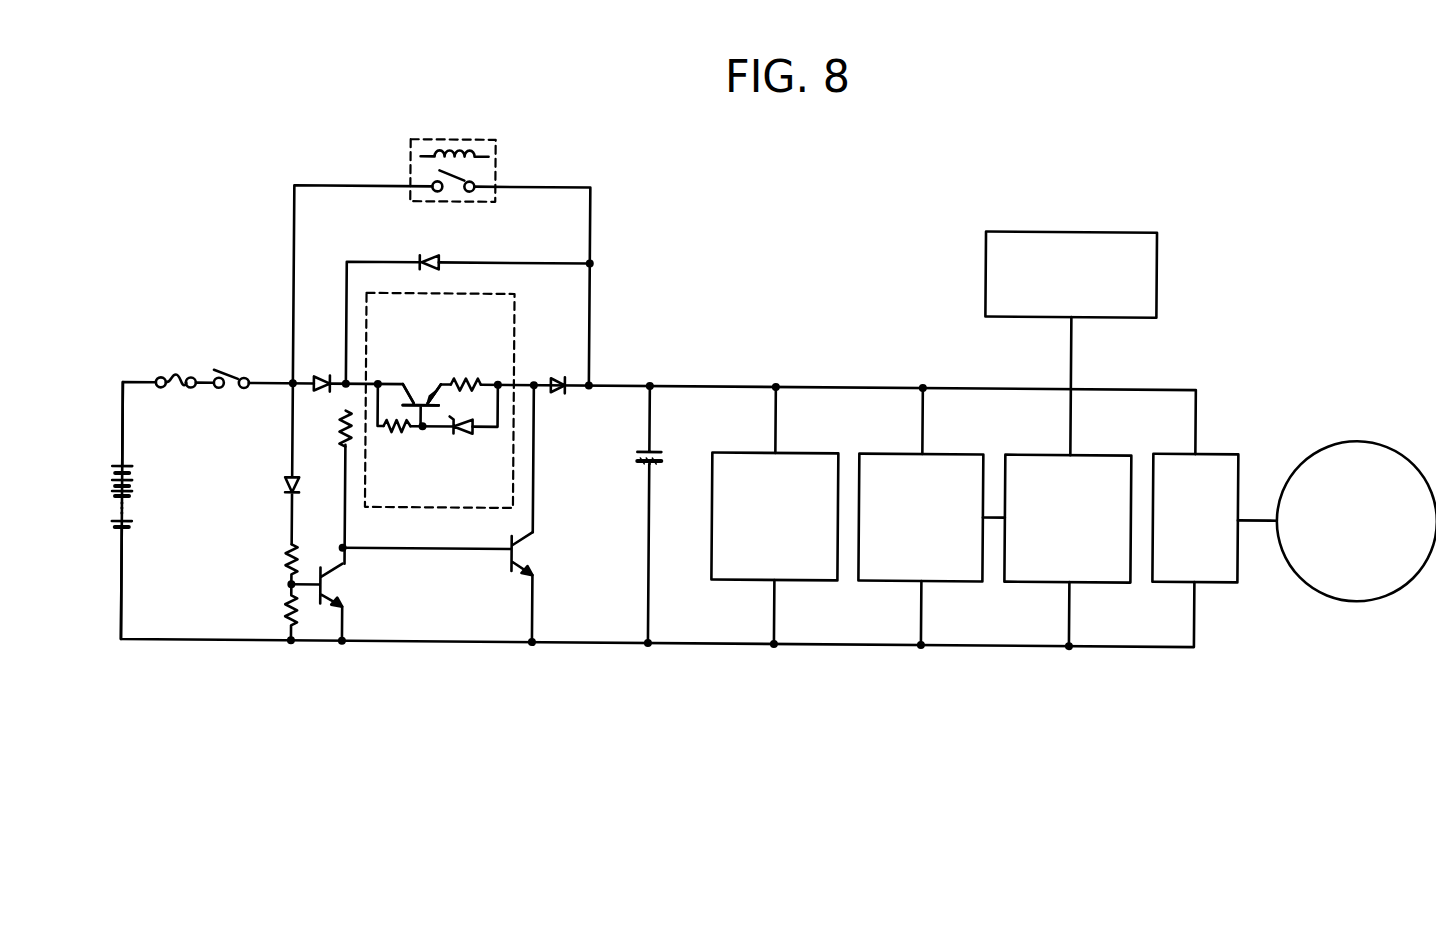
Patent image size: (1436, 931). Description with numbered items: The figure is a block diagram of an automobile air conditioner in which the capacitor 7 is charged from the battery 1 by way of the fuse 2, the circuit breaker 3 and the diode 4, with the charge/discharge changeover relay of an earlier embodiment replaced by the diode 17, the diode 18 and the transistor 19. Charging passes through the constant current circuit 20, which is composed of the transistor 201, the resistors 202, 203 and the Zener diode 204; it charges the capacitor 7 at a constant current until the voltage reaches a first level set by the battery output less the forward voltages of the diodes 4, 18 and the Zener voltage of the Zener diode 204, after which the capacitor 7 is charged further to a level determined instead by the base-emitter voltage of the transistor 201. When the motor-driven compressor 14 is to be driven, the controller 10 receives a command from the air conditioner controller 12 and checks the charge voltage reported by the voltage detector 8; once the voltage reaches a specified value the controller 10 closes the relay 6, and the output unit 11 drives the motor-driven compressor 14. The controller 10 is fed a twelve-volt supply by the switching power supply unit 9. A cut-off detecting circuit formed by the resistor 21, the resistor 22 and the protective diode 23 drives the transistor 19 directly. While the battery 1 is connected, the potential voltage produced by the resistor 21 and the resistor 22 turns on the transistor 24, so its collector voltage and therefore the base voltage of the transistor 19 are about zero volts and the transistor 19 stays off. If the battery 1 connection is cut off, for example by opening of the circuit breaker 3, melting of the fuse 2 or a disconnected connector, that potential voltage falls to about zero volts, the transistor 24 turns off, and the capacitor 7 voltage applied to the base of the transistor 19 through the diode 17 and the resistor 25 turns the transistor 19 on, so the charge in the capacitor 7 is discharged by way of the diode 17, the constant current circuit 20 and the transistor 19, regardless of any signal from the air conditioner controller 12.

The battery 1 is at (137, 487).
The fuse 2 is at (172, 378).
The circuit breaker 3 is at (226, 378).
The diode 4 is at (318, 374).
The relay 6 is at (496, 151).
The capacitor 7 is at (663, 448).
The voltage detector 8 is at (742, 582).
The switching power supply unit 9 is at (894, 582).
The controller 10 is at (1046, 582).
The output unit 11 is at (1172, 582).
The air conditioner controller 12 is at (1158, 249).
The motor-driven compressor 14 is at (1373, 433).
The diode 17 is at (422, 254).
The diode 18 is at (554, 400).
The transistor 19 is at (532, 556).
The constant current circuit 20 is at (469, 393).
The transistor 201 is at (413, 396).
The resistor 202 is at (398, 443).
The resistor 203 is at (468, 374).
The Zener diode 204 is at (464, 440).
The resistor 21 is at (277, 561).
The resistor 22 is at (277, 611).
The diode 23 is at (281, 489).
The transistor 24 is at (338, 589).
The resistor 25 is at (333, 431).